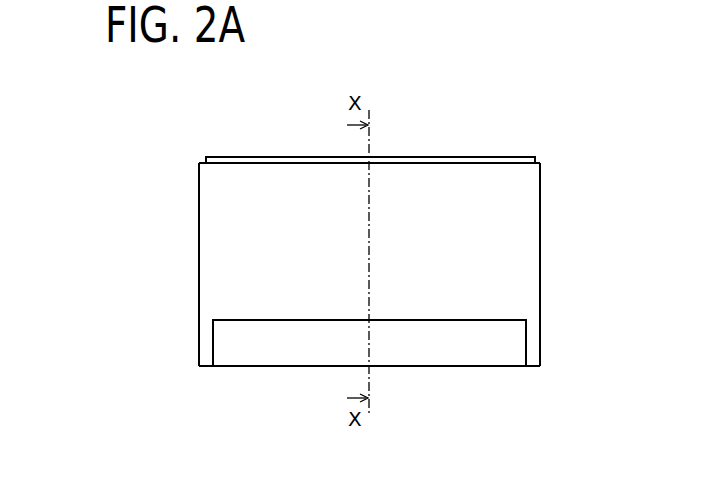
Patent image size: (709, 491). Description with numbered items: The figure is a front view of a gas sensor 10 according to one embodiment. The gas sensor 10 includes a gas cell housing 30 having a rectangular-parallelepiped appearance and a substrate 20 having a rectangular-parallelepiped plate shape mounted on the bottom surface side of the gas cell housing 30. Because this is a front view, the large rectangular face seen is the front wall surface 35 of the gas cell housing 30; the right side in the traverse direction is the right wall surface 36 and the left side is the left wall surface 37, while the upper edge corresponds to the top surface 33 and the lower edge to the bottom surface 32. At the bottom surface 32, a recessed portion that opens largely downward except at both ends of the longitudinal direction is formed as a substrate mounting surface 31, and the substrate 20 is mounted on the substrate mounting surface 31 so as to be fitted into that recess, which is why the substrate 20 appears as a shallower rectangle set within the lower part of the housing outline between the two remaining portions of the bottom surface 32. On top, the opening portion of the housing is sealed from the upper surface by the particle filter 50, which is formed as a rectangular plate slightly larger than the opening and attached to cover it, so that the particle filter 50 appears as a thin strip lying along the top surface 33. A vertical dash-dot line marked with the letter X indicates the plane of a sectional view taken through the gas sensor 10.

The gas sensor 10 is at (497, 128).
The substrate 20 is at (279, 370).
The gas cell housing 30 is at (542, 205).
The substrate mounting surface 31 is at (505, 321).
The bottom surface 32 is at (203, 366).
The top surface 33 is at (538, 157).
The front wall surface 35 is at (225, 223).
The right wall surface 36 is at (541, 245).
The left wall surface 37 is at (199, 282).
The particle filter 50 is at (245, 157).